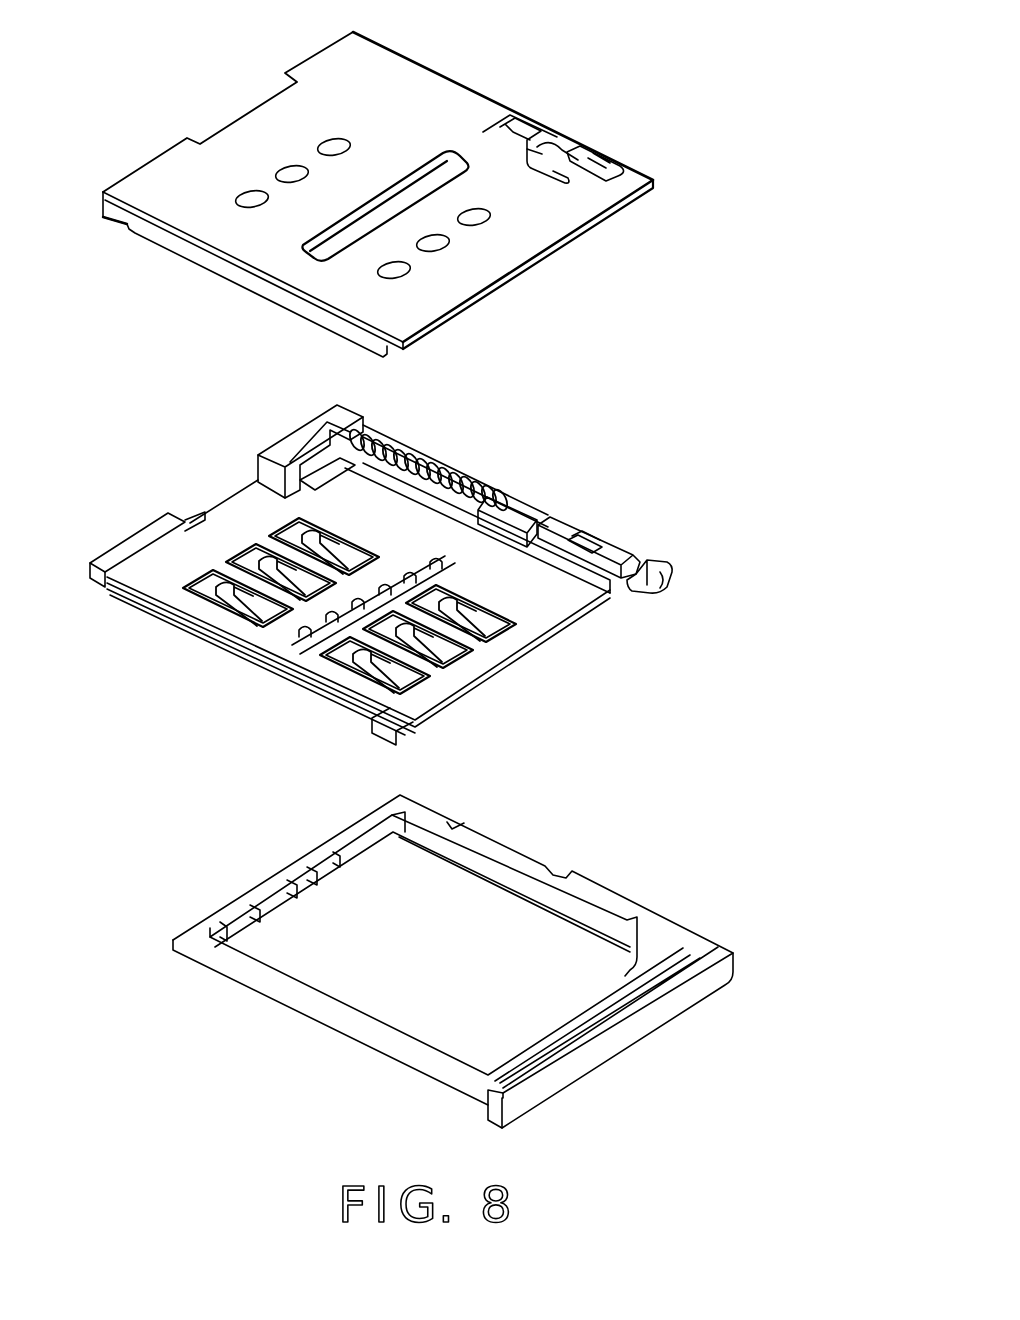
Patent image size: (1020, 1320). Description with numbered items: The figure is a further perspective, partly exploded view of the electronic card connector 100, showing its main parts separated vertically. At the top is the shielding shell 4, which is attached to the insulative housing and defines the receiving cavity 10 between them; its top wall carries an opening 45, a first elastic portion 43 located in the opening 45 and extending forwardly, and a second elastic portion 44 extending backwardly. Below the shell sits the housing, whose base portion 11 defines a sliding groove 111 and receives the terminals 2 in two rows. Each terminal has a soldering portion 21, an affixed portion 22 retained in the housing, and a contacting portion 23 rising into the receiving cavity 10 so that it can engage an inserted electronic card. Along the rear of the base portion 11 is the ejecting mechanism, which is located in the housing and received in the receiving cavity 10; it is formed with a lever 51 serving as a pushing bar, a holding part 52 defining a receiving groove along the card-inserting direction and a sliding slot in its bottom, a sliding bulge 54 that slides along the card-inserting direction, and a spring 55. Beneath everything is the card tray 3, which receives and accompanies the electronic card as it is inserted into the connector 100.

The electronic card connector 100 is at (466, 580).
The shielding shell 4 is at (398, 194).
The first elastic portion 43 is at (528, 126).
The second elastic portion 44 is at (610, 156).
The opening 45 is at (555, 143).
The receiving cavity 10 is at (402, 567).
The base portion 11 is at (553, 607).
The sliding groove 111 is at (300, 462).
The spring 55 is at (470, 478).
The sliding bulge 54 is at (520, 508).
The holding part 52 is at (570, 527).
The lever 51 is at (665, 573).
The terminals 2 is at (293, 632).
The soldering portion 21 is at (325, 628).
The affixed portion 22 is at (258, 614).
The contacting portion 23 is at (227, 596).
The card tray 3 is at (453, 961).